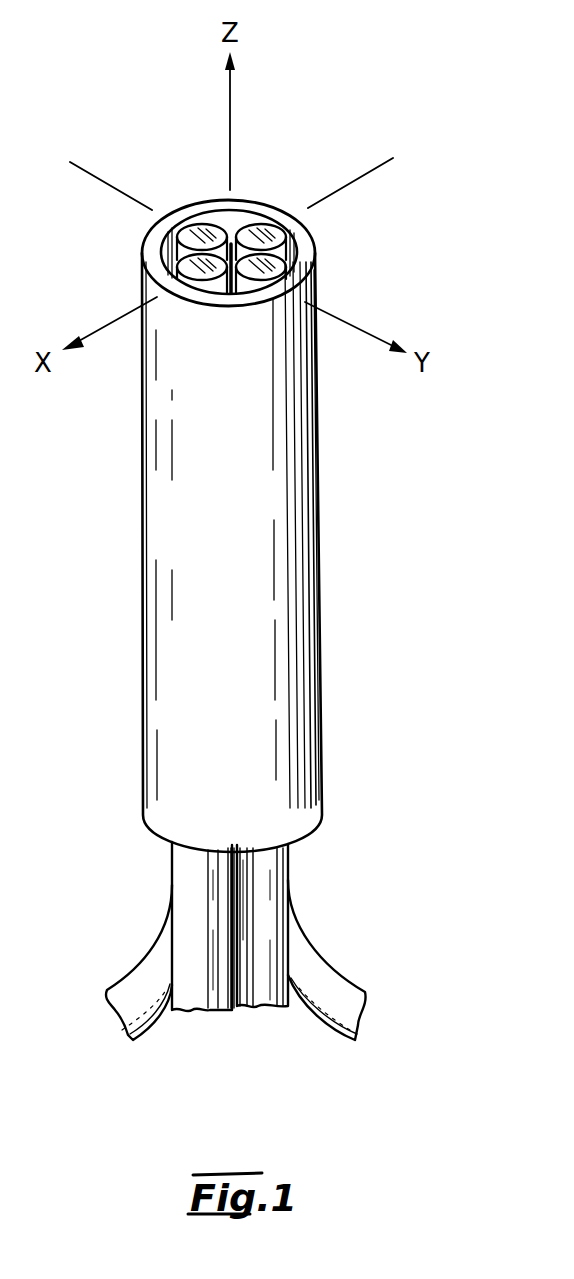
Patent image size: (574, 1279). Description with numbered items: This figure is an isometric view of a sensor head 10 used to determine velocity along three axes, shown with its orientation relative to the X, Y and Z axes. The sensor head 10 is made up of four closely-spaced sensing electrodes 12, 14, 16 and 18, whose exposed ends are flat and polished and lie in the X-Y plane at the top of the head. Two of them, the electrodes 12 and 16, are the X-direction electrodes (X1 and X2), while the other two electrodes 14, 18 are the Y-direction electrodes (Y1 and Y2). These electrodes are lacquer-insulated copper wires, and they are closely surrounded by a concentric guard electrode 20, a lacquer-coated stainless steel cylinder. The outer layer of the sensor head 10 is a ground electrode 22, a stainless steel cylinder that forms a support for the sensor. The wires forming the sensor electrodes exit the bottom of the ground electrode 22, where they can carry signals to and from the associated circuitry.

The sensor head 10 is at (250, 630).
The sensing electrode 12 is at (177, 263).
The sensing electrode 14 is at (198, 227).
The sensing electrode 16 is at (253, 228).
The sensing electrode 18 is at (278, 263).
The guard electrode 20 is at (163, 237).
The ground electrode 22 is at (165, 487).